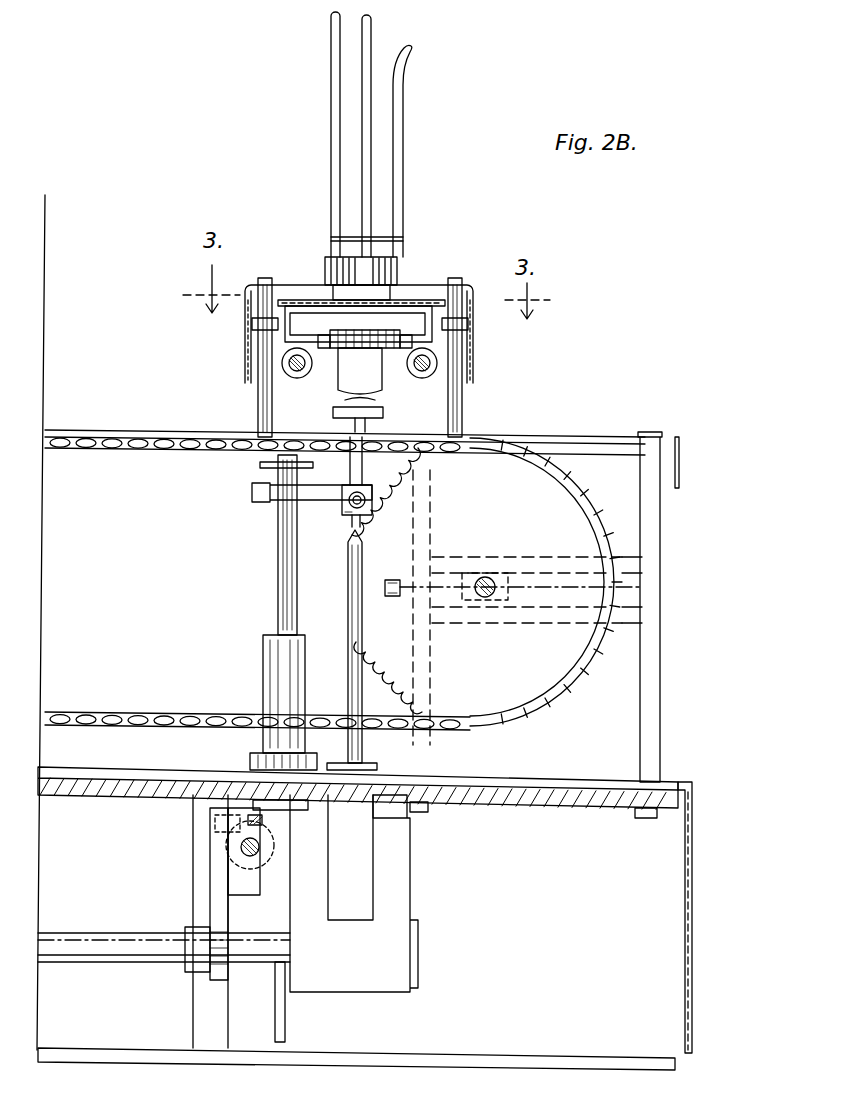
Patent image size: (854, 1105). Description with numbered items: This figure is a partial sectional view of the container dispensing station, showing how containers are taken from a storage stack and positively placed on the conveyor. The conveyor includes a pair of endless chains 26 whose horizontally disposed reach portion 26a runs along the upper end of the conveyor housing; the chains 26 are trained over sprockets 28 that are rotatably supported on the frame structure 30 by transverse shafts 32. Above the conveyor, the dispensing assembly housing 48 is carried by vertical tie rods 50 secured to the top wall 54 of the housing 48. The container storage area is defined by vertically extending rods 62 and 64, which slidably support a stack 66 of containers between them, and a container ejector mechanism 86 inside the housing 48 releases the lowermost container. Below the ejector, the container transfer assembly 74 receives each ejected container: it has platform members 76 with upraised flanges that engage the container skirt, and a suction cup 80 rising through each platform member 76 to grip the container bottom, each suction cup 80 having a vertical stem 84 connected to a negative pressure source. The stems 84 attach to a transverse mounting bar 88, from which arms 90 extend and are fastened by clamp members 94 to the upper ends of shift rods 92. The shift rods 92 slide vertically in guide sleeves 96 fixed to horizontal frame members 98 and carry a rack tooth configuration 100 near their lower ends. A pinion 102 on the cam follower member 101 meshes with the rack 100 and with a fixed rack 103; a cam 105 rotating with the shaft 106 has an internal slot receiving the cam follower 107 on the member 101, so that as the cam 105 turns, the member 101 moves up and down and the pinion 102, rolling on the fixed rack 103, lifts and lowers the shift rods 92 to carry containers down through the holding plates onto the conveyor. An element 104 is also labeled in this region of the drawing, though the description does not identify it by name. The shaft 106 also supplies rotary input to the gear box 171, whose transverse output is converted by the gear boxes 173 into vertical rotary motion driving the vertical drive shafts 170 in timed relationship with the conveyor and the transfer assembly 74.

The endless chains 26 is at (160, 712).
The reach portion 26a is at (105, 447).
The sprockets 28 is at (567, 495).
The frame structure 30 is at (545, 618).
The transverse shafts 32 is at (490, 580).
The housing 48 is at (484, 355).
The vertical tie rods 50 is at (258, 400).
The top wall 54 is at (435, 285).
The rod 62 is at (335, 145).
The rod 64 is at (400, 148).
The stack 66 is at (386, 240).
The container transfer assembly 74 is at (326, 417).
The platform members 76 is at (385, 415).
The suction cup 80 is at (372, 410).
The vertical stem 84 is at (420, 483).
The container ejector mechanism 86 is at (309, 281).
The mounting bar 88 is at (342, 511).
The arms 90 is at (326, 490).
The shift rods 92 is at (278, 598).
The clamp members 94 is at (262, 487).
The guide sleeves 96 is at (263, 667).
The frame members 98 is at (122, 792).
The rack tooth configuration 100 is at (275, 829).
The cam follower member 101 is at (225, 880).
The pinion 102 is at (265, 853).
The fixed rack 103 is at (205, 1005).
The gear 104 is at (240, 850).
The cam 105 is at (226, 915).
The shaft 106 is at (132, 940).
The cam follower 107 is at (212, 820).
The vertical drive shafts 170 is at (348, 603).
The gear box 171 is at (400, 888).
The gear boxes 173 is at (350, 912).